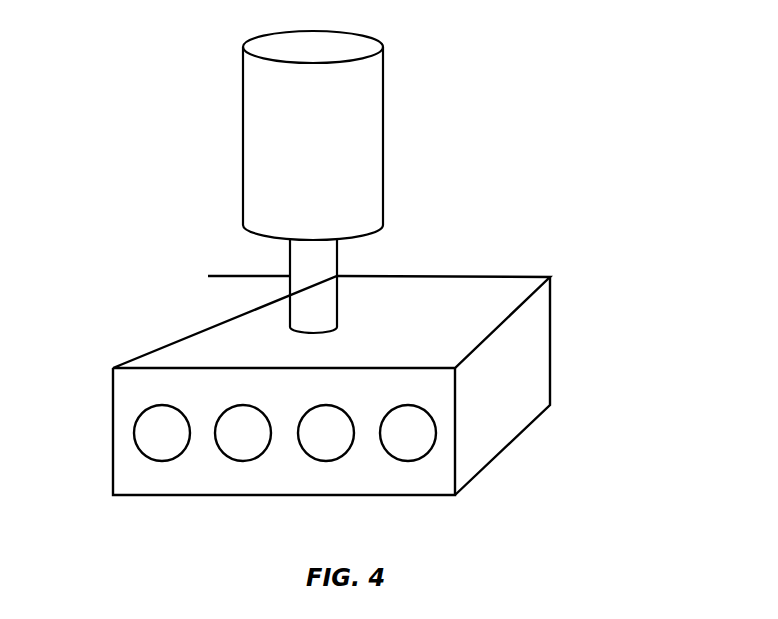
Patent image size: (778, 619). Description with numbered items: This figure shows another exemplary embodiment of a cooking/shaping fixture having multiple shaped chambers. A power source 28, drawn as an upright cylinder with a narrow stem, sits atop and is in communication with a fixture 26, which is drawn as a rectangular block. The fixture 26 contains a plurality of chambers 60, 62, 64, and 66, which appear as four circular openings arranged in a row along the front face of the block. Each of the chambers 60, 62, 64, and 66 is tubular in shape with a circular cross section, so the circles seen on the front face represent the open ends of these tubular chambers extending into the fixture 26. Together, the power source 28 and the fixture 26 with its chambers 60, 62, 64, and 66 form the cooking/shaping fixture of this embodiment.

The fixture 26 is at (470, 277).
The power source 28 is at (383, 120).
The chamber 60 is at (162, 435).
The chamber 62 is at (245, 432).
The chamber 64 is at (326, 432).
The chamber 66 is at (408, 433).